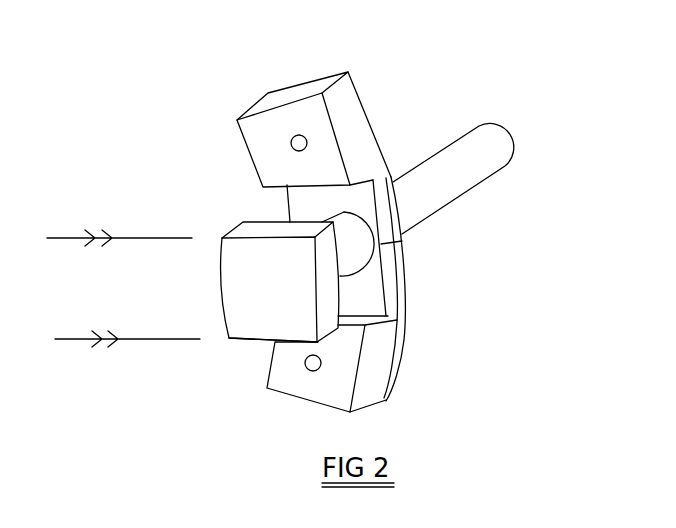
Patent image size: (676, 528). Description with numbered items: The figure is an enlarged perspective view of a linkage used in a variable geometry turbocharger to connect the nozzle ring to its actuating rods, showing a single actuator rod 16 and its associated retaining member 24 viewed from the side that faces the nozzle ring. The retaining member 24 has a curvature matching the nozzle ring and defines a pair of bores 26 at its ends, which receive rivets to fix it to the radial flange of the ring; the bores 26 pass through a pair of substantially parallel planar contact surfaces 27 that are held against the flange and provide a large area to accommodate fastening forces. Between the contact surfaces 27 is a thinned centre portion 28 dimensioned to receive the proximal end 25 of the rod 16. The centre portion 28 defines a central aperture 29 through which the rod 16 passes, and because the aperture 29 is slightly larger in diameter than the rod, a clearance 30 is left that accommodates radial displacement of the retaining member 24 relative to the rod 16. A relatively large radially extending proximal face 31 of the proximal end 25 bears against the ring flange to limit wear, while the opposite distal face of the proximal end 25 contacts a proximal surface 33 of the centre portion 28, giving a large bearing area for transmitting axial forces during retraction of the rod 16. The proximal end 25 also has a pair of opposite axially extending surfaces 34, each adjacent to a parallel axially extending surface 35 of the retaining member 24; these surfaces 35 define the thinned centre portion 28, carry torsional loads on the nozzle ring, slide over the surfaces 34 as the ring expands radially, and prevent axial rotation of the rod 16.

The actuator rod 16 is at (498, 158).
The retaining member 24 is at (317, 220).
The proximal end 25 is at (245, 341).
The bores 26 is at (290, 144).
The contact surfaces 27 is at (270, 122).
The thinned centre portion 28 is at (395, 178).
The central aperture 29 is at (381, 244).
The clearance 30 is at (345, 276).
The proximal face 31 is at (246, 309).
The proximal surface 33 is at (298, 205).
The axially extending surfaces 34 is at (240, 230).
The axially extending surface 35 is at (386, 320).